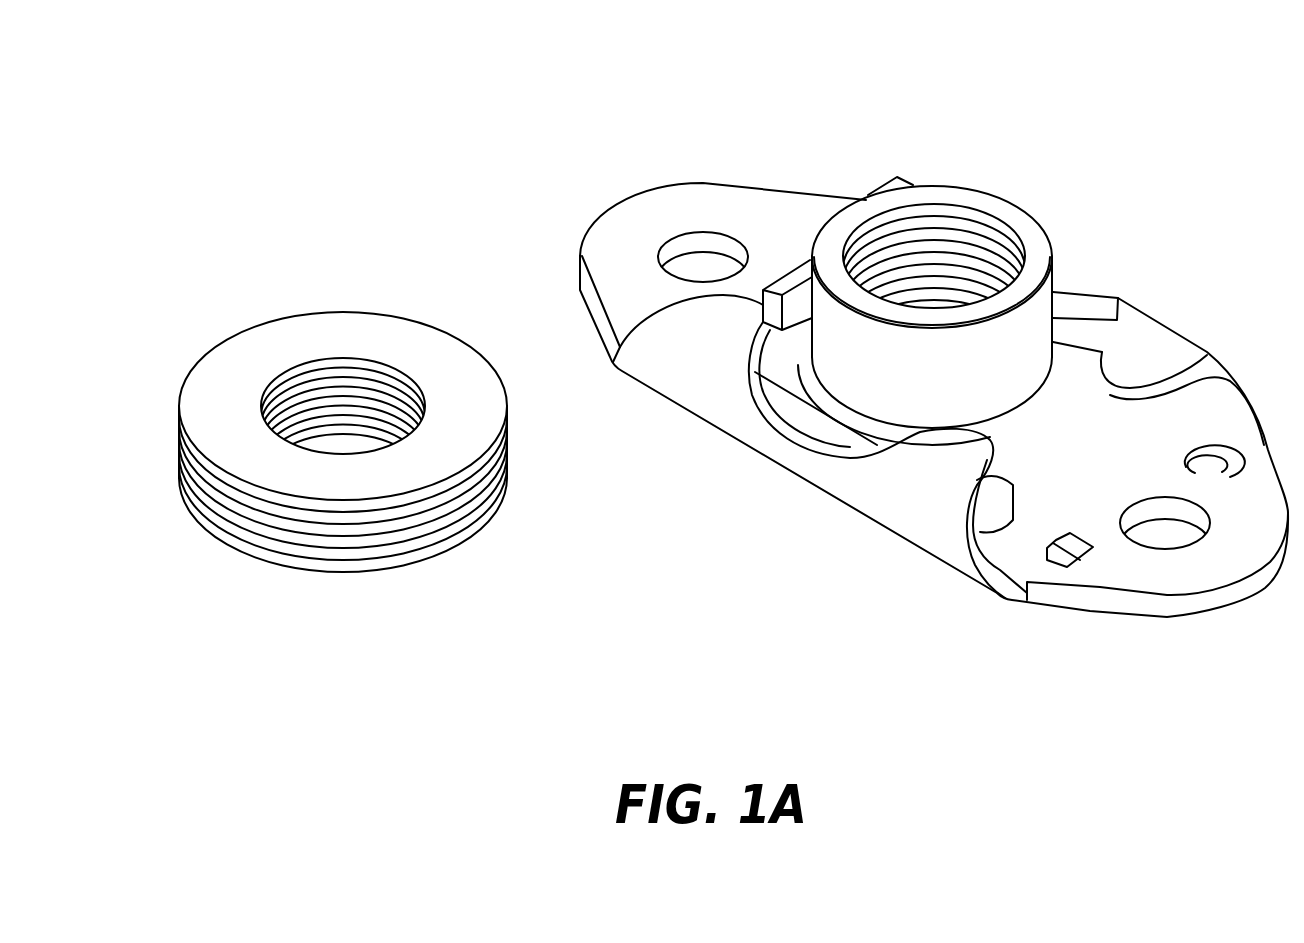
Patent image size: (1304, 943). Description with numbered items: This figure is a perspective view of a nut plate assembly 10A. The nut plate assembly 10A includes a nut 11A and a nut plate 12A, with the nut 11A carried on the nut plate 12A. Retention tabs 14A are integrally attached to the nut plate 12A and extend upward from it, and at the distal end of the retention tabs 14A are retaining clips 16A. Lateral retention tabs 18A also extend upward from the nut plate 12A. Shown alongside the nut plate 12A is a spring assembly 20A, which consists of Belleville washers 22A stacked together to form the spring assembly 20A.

The nut plate assembly 10A is at (637, 132).
The nut 11A is at (1008, 196).
The nut plate 12A is at (1141, 624).
The retention tabs 14A is at (851, 508).
The retaining clips 16A is at (699, 345).
The lateral retention tabs 18A is at (1067, 420).
The spring assembly 20A is at (268, 258).
The Belleville washers 22A is at (462, 552).